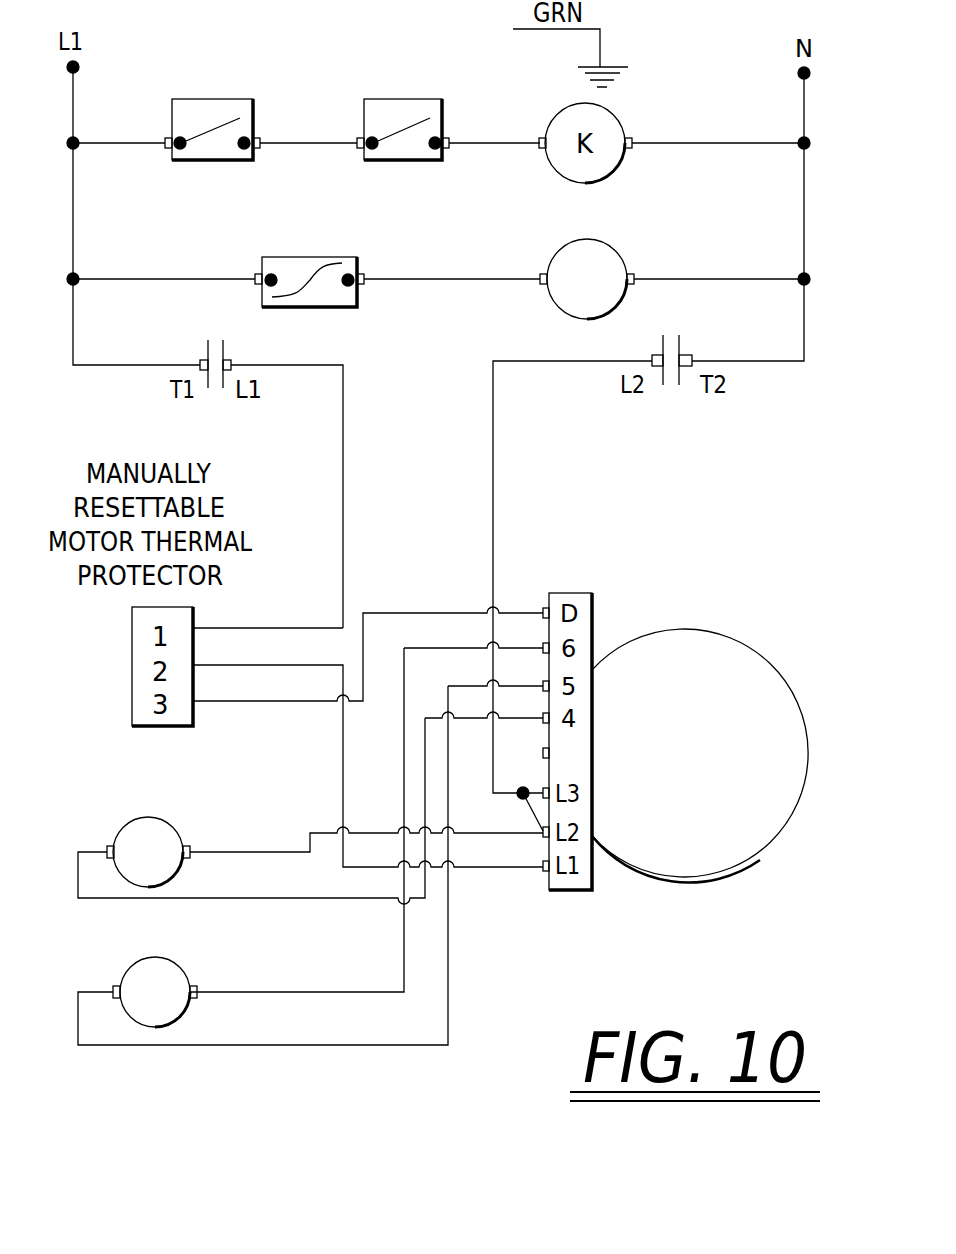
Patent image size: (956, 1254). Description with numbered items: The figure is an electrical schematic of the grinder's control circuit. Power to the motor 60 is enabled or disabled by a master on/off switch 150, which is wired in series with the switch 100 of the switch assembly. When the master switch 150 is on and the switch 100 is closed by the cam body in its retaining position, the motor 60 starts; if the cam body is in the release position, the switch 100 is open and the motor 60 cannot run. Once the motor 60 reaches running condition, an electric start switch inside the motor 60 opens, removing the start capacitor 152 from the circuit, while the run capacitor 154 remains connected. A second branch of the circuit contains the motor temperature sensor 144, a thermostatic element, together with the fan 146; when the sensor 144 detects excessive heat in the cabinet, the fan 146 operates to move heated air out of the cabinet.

The master on/off switch 150 is at (172, 113).
The switch 100 is at (443, 118).
The motor temperature sensor 144 is at (358, 298).
The fan 146 is at (617, 252).
The motor 60 is at (752, 862).
The start capacitor 152 is at (175, 830).
The run capacitor 154 is at (185, 972).